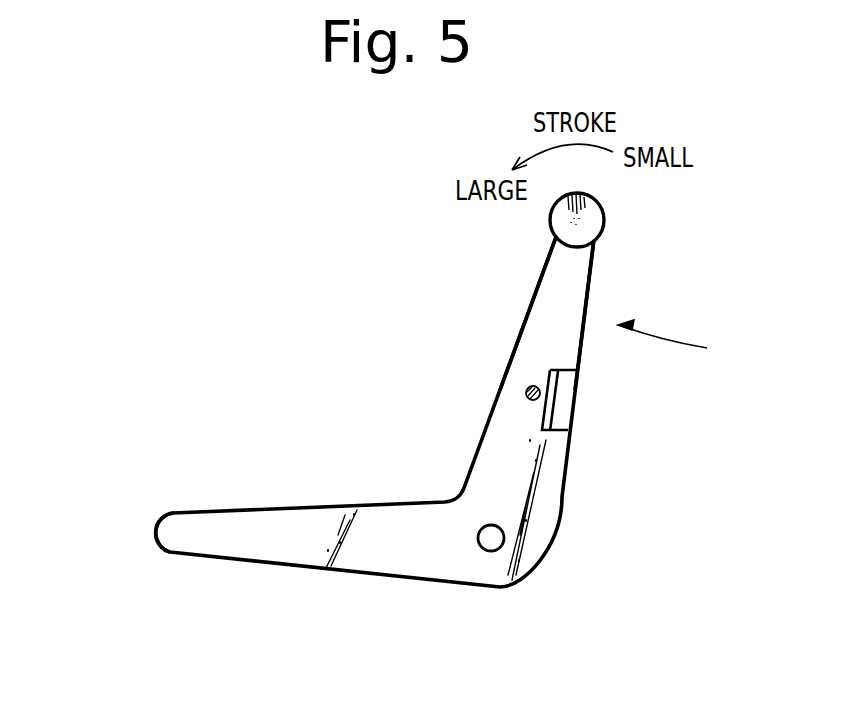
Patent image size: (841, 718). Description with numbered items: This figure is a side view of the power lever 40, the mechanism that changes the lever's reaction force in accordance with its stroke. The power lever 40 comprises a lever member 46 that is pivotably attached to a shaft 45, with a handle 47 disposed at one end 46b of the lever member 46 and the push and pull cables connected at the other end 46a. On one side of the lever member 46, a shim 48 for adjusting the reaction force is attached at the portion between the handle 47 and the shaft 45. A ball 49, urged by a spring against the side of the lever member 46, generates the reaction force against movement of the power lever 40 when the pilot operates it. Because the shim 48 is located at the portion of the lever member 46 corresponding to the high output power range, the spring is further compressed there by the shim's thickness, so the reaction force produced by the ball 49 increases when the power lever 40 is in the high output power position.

The power lever 40 is at (682, 343).
The shaft 45 is at (502, 543).
The lever member 46 is at (555, 483).
The other end of the lever member 46a is at (170, 545).
The one end of the lever member 46b is at (577, 288).
The handle 47 is at (603, 215).
The shim 48 is at (565, 397).
The ball 49 is at (523, 390).